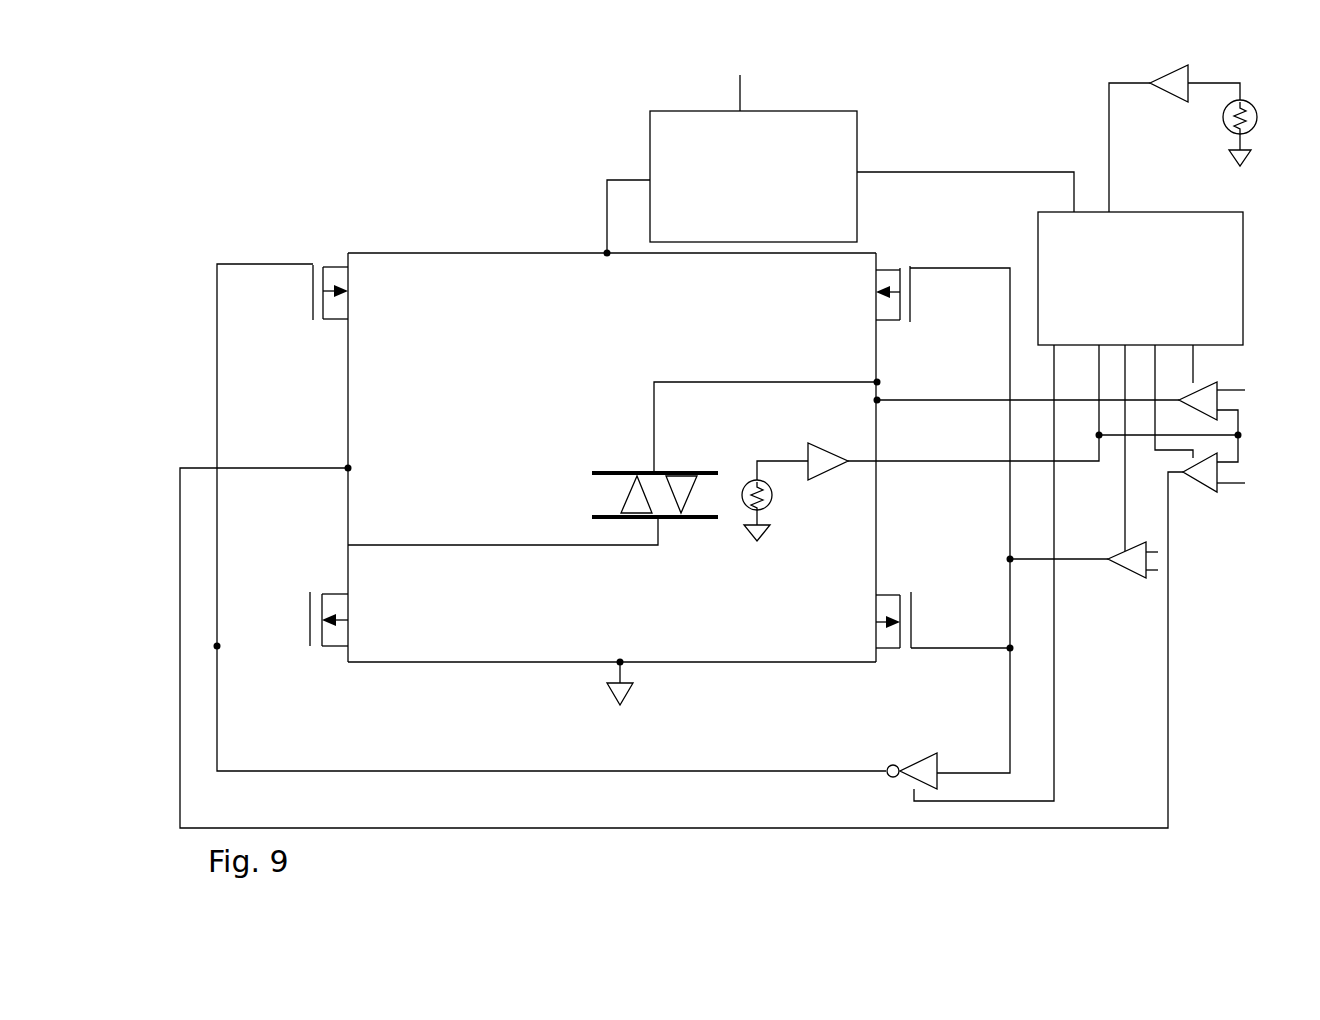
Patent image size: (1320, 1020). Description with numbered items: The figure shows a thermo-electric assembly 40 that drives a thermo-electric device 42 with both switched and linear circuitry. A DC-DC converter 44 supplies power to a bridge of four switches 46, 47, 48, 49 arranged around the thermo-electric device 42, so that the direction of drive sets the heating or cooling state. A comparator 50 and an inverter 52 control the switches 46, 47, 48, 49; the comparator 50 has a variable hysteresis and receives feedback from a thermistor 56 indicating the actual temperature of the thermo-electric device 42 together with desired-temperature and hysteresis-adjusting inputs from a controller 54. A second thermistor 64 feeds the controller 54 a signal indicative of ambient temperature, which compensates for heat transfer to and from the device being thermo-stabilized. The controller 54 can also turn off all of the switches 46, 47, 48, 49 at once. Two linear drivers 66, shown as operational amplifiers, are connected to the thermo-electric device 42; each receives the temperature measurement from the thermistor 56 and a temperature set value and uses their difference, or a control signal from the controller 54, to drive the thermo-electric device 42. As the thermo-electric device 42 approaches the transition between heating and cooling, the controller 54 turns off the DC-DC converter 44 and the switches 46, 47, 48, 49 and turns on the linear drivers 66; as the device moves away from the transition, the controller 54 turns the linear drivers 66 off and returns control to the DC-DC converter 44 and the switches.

The thermo-electric assembly 40 is at (330, 177).
The thermo-electric device 42 is at (580, 500).
The DC-DC converter 44 is at (753, 176).
The switch 46 is at (305, 303).
The switch 47 is at (302, 612).
The switch 48 is at (918, 292).
The switch 49 is at (920, 622).
The comparator 50 is at (1128, 580).
The inverter 52 is at (915, 760).
The controller 54 is at (1140, 278).
The thermistor 56 is at (777, 493).
The second thermistor 64 is at (1225, 120).
The linear drivers 66 is at (1230, 383).